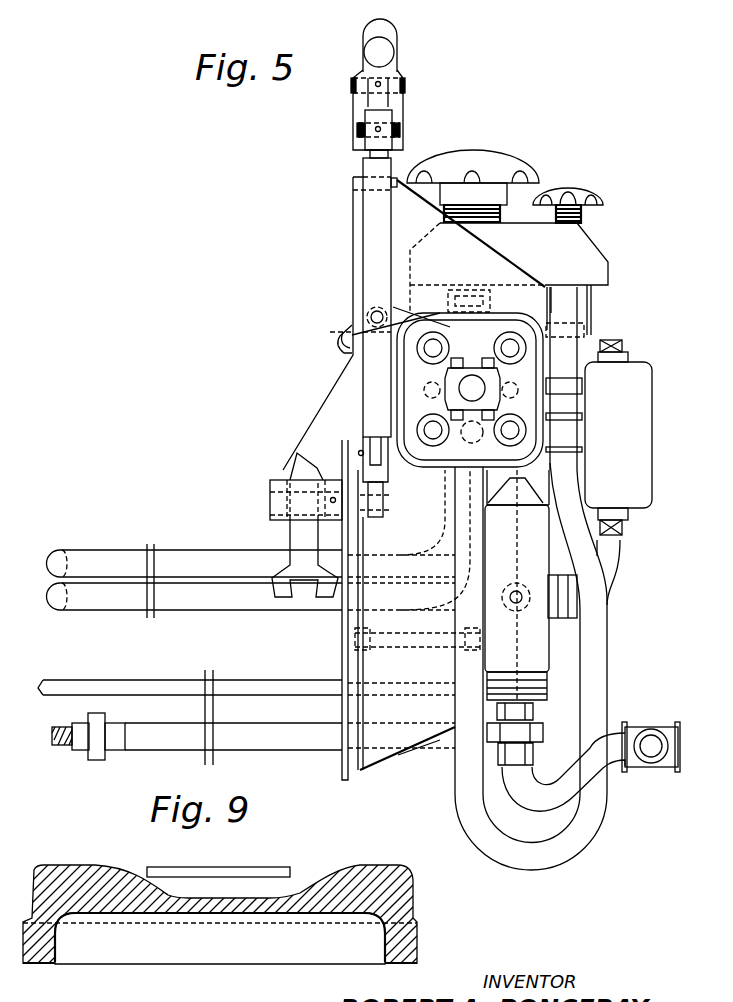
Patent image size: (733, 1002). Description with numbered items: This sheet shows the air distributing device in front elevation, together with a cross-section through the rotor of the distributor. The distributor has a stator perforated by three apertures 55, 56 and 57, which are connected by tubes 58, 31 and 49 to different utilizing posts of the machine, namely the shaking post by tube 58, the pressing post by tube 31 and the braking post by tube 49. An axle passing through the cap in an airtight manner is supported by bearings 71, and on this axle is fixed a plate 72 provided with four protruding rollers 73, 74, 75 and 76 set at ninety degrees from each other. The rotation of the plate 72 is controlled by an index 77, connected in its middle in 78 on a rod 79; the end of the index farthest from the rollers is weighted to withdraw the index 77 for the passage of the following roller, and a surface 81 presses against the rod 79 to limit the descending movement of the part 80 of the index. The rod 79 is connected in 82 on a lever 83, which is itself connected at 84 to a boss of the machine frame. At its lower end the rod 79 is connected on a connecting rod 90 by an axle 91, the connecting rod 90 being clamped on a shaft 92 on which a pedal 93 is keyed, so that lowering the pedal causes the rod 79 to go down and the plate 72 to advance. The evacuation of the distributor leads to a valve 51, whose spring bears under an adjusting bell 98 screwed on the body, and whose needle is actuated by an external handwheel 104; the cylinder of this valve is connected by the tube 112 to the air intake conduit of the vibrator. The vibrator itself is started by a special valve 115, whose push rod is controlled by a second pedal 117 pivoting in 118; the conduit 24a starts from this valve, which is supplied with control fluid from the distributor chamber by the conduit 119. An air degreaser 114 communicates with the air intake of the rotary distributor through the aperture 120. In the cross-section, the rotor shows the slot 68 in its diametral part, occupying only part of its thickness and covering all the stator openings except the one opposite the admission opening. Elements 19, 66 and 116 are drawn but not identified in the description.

In FIG. 5, the lever 83 is at (391, 31).
In FIG. 5, the connection of rod 79 on lever 83 82 is at (412, 87).
In FIG. 5, the connection of lever 83 to boss 84 is at (412, 135).
In FIG. 5, the rod 79 is at (372, 220).
In FIG. 5, the connection of index 77 on rod 79 78 is at (377, 310).
In FIG. 5, the surface of index 81 is at (360, 332).
In FIG. 5, the part of index 80 is at (343, 342).
In FIG. 5, the adjusting bell 98 is at (480, 157).
In FIG. 5, the handwheel 104 is at (572, 192).
In FIG. 5, the valve 51 is at (507, 252).
In FIG. 5, the index 77 is at (395, 314).
In FIG. 5, the plate 72 is at (447, 327).
In FIG. 5, the roller 73 is at (426, 355).
In FIG. 5, the roller 74 is at (510, 338).
In FIG. 5, the roller 75 is at (514, 428).
In FIG. 5, the roller 76 is at (437, 445).
In FIG. 5, the bearings 71 is at (455, 383).
In FIG. 5, the aperture of stator 55 is at (428, 387).
In FIG. 5, the aperture of stator 57 is at (515, 390).
In FIG. 5, the aperture of stator 56 is at (471, 434).
In FIG. 5, the axle 91 is at (358, 453).
In FIG. 5, the connecting rod 90 is at (387, 468).
In FIG. 5, the shaft 92 is at (277, 495).
In FIG. 5, the pedal 93 is at (308, 575).
In FIG. 5, the tube 58 is at (221, 562).
In FIG. 5, the conduit 24a is at (210, 605).
In FIG. 5, the tube 49 is at (259, 690).
In FIG. 5, the tube 31 is at (263, 742).
In FIG. 5, the bracket 19 is at (492, 495).
In FIG. 5, the second pedal 117 is at (528, 620).
In FIG. 5, the special valve 115 is at (545, 662).
In FIG. 5, the outlet pipe 66 is at (530, 866).
In FIG. 5, the aperture 120 is at (583, 387).
In FIG. 5, the air degreaser 114 is at (640, 466).
In FIG. 5, the pivot of second pedal 118 is at (548, 504).
In FIG. 5, the hose 116 is at (578, 536).
In FIG. 5, the tube 112 is at (613, 562).
In FIG. 5, the conduit 119 is at (568, 405).
In FIG. 9, the slot 68 is at (206, 960).